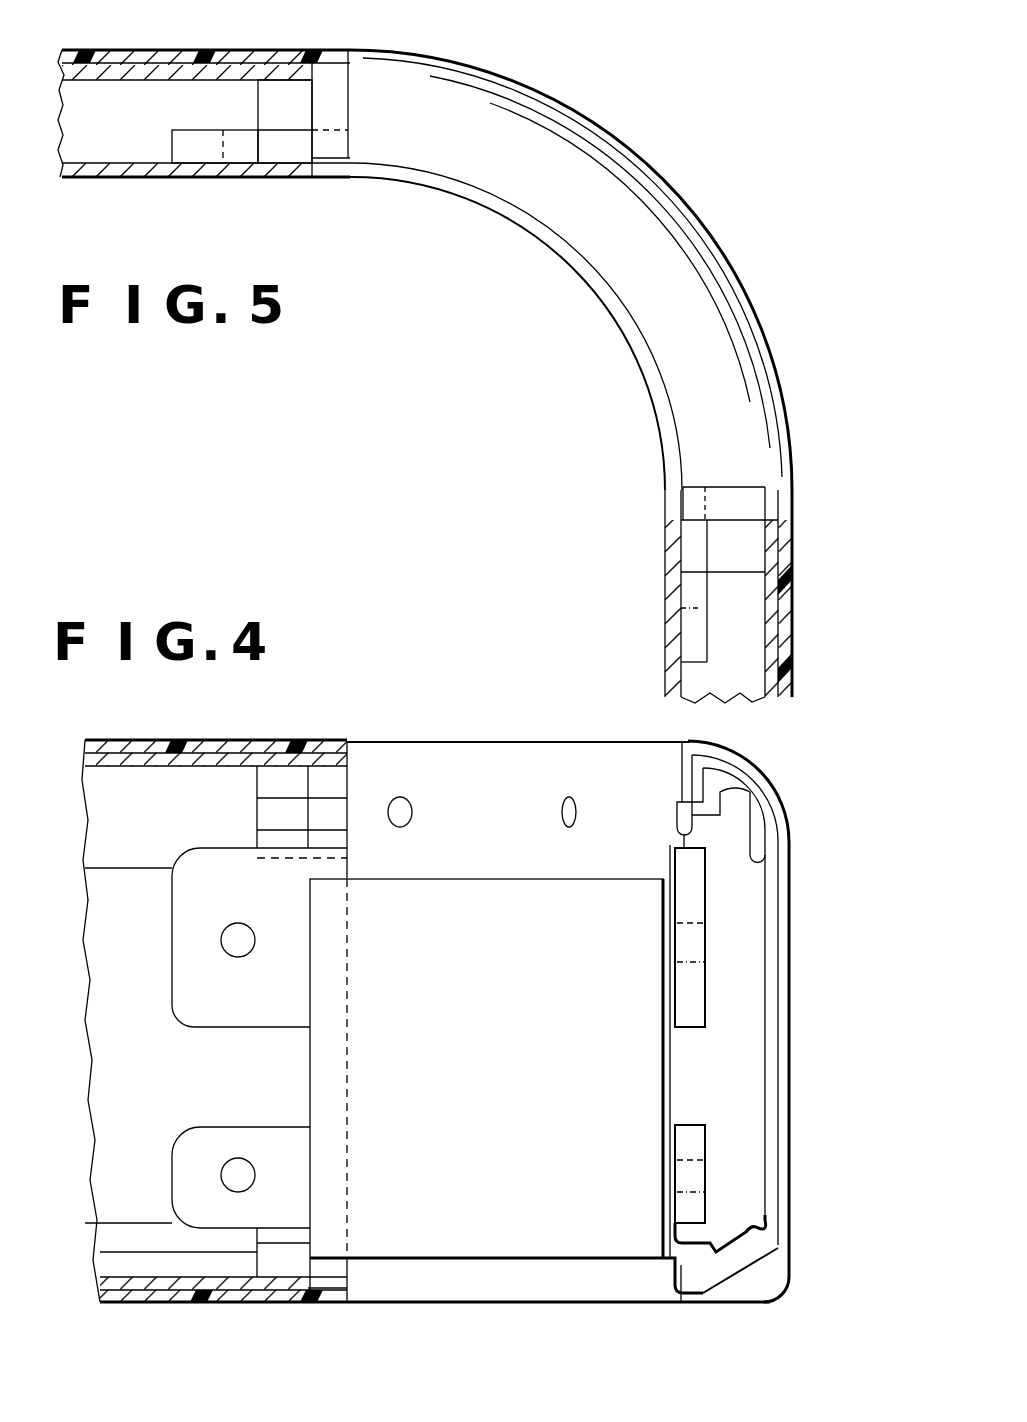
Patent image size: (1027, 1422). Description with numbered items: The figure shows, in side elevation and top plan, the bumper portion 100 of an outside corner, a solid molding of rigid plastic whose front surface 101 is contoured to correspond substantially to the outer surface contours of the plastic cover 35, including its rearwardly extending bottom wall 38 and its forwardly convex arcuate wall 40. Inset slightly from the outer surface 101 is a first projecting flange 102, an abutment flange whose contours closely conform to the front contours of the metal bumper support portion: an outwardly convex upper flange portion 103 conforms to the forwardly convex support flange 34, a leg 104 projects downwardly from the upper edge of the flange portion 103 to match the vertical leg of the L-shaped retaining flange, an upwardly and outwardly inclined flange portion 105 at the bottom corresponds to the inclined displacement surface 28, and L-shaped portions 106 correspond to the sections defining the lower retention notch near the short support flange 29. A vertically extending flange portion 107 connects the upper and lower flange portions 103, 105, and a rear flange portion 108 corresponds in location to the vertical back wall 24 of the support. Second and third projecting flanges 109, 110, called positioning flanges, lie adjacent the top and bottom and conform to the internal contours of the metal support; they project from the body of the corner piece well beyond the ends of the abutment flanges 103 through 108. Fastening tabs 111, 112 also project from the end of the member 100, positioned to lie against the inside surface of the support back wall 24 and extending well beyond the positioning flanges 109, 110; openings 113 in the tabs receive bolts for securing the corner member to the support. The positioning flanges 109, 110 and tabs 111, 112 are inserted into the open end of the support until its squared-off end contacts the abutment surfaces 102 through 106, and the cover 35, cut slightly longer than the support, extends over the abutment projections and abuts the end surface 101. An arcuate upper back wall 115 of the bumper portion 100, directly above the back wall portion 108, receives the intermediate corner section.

In FIG. 5, the back wall 24 is at (210, 177).
In FIG. 4, the displacement surface 28 is at (133, 1265).
In FIG. 4, the support flange 29 is at (125, 1235).
In FIG. 5, the support flange 34 is at (772, 597).
In FIG. 4, the support flange 34 is at (125, 775).
In FIG. 5, the plastic cover 35 is at (794, 667).
In FIG. 4, the bottom wall 38 is at (185, 1300).
In FIG. 4, the arcuate wall 40 is at (185, 740).
In FIG. 5, the bumper portion 100 is at (650, 270).
In FIG. 4, the bumper portion 100 is at (495, 1116).
In FIG. 5, the front surface 101 is at (352, 85).
In FIG. 4, the front surface 101 is at (350, 772).
In FIG. 4, the first projecting flange 102 is at (778, 941).
In FIG. 5, the upper flange portion 103 is at (338, 107).
In FIG. 4, the upper flange portion 103 is at (752, 795).
In FIG. 4, the leg 104 is at (337, 785).
In FIG. 4, the inclined flange portion 105 is at (735, 1270).
In FIG. 4, the L-shaped portions 106 is at (337, 1272).
In FIG. 4, the vertically extending flange portion 107 is at (768, 1060).
In FIG. 4, the rear flange portion 108 is at (325, 1053).
In FIG. 5, the second projecting flange 109 is at (296, 95).
In FIG. 4, the second projecting flange 109 is at (280, 777).
In FIG. 4, the third projecting flange 110 is at (283, 1267).
In FIG. 5, the fastening tab 111 is at (185, 147).
In FIG. 4, the fastening tab 111 is at (187, 980).
In FIG. 4, the fastening tab 112 is at (197, 1147).
In FIG. 4, the openings 113 is at (235, 940).
In FIG. 5, the arcuate upper back wall 115 is at (630, 318).
In FIG. 4, the arcuate upper back wall 115 is at (473, 770).